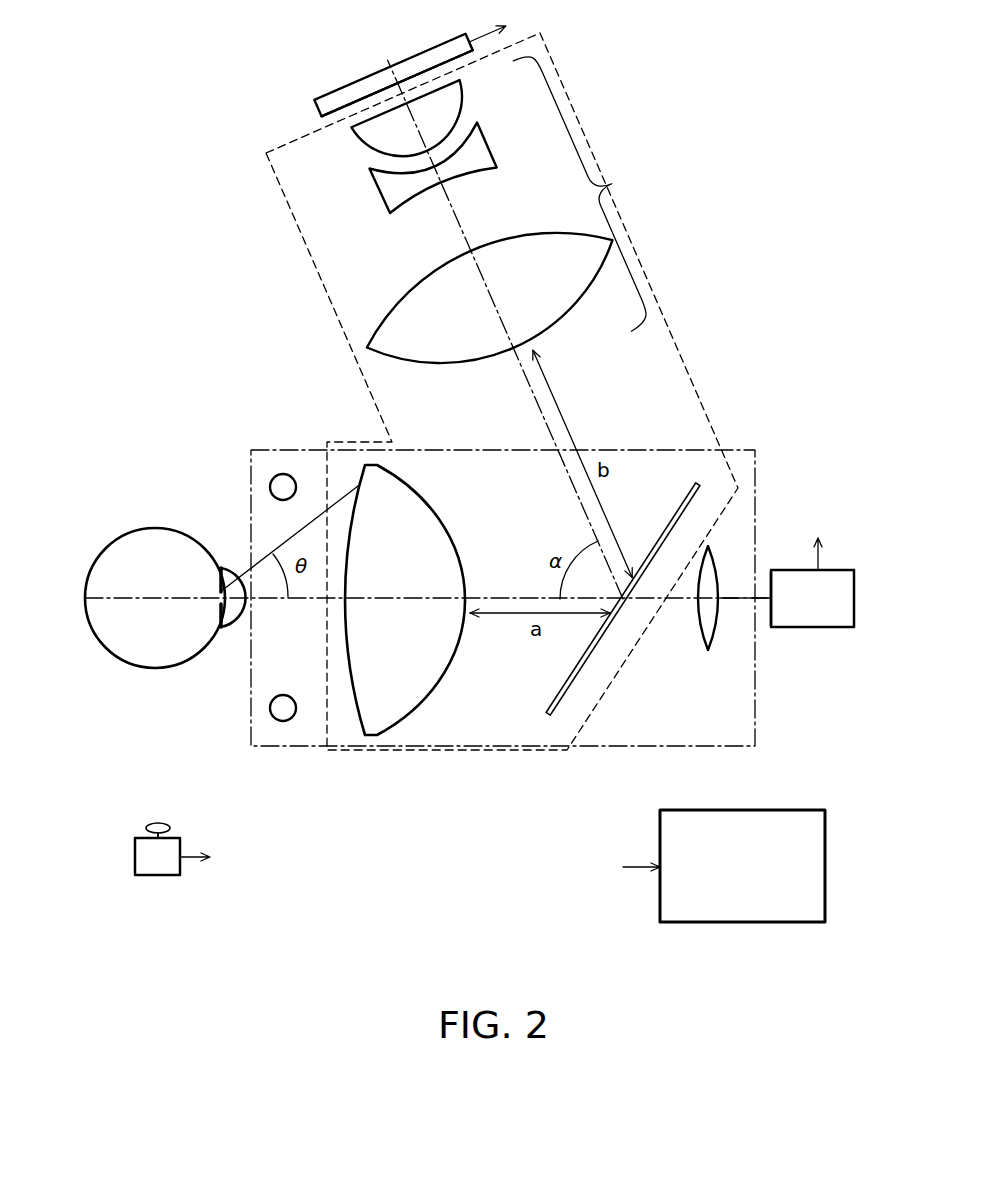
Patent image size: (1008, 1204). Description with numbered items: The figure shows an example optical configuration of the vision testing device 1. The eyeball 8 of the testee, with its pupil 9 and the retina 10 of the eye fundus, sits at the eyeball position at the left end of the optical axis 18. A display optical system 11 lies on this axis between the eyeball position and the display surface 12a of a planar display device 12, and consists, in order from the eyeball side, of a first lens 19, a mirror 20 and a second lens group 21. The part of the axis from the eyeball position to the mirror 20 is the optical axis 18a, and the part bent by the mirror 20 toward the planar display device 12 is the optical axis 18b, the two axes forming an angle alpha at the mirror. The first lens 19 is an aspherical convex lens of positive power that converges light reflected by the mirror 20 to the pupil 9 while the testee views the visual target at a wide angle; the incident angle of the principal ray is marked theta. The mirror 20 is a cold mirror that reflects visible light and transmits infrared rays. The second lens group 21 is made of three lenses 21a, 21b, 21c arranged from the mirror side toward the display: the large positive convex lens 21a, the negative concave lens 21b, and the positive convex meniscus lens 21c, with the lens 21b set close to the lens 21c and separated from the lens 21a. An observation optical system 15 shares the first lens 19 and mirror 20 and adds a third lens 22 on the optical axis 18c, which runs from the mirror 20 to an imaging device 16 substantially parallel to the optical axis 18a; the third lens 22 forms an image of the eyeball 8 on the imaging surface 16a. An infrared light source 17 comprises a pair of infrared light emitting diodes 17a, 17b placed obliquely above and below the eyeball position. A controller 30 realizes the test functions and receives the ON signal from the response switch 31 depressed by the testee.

The vision testing device 1 is at (852, 975).
The eyeball 8 is at (157, 670).
The pupil 9 is at (217, 593).
The retina 10 is at (103, 633).
The display optical system 11 is at (675, 335).
The planar display device 12 is at (317, 97).
The display surface 12a is at (339, 116).
The observation optical system 15 is at (755, 450).
The imaging device 16 is at (818, 627).
The imaging surface 16a is at (771, 587).
The infrared light source 17 is at (302, 598).
The infrared light emitting diode 17a is at (283, 474).
The infrared light emitting diode 17b is at (283, 721).
The optical axis 18 is at (428, 394).
The optical axis 18a is at (493, 597).
The optical axis 18b is at (533, 392).
The optical axis 18c is at (740, 599).
The first lens 19 is at (403, 487).
The mirror 20 is at (570, 682).
The second lens group 21 is at (508, 222).
The lens 21a is at (590, 290).
The lens 21b is at (498, 160).
The lens 21c is at (463, 98).
The third lens 22 is at (698, 610).
The controller 30 is at (772, 810).
The response switch 31 is at (155, 875).